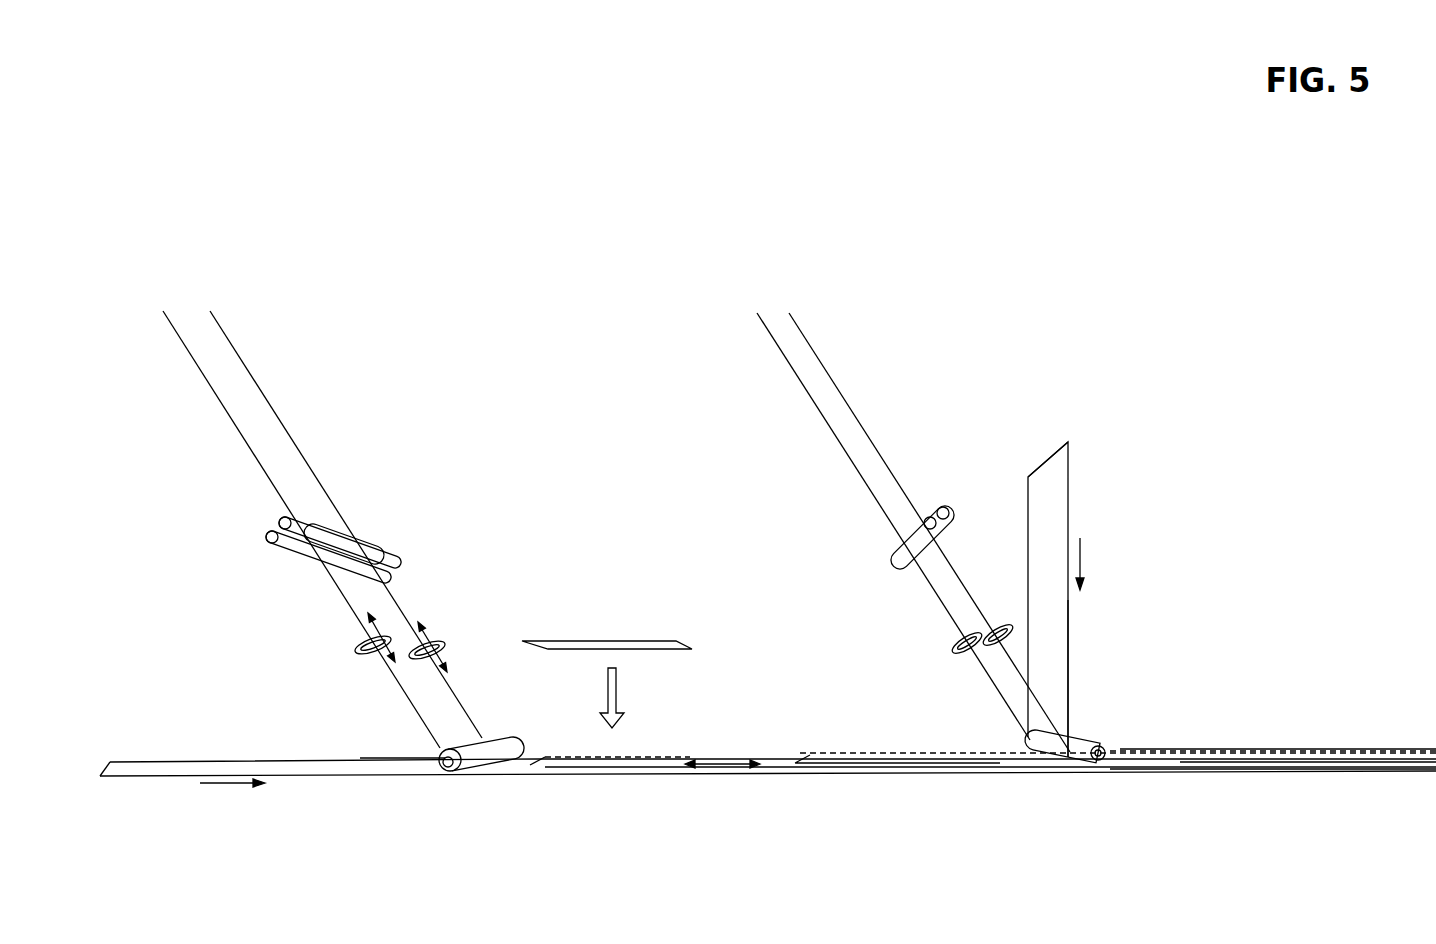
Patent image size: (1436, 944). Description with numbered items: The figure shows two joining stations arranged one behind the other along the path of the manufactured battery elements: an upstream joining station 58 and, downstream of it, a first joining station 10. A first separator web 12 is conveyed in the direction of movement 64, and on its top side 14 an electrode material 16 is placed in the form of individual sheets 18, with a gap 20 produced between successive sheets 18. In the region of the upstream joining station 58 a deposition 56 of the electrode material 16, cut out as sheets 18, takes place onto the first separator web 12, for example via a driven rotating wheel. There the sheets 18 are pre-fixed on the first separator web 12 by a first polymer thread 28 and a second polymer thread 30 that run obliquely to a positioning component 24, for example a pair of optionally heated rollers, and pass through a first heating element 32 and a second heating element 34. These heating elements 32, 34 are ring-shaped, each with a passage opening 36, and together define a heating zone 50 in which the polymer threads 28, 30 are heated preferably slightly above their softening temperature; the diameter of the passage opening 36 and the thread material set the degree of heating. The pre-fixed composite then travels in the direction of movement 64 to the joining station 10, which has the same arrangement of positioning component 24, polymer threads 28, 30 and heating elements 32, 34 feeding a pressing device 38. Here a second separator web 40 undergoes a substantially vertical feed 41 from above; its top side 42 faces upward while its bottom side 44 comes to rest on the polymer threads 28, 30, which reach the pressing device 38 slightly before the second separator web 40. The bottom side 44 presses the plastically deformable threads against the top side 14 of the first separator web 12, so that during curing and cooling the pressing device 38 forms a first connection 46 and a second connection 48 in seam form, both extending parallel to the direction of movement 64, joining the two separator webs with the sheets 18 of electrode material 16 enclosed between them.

The joining station 10 is at (1225, 420).
The first separator web 12 is at (333, 779).
The top side 14 is at (385, 768).
The electrode material 16 is at (979, 667).
The sheet 18 is at (655, 643).
The gap 20 is at (723, 762).
The positioning component 24 is at (283, 545).
The first polymer thread 28 is at (330, 582).
The second polymer thread 30 is at (390, 590).
The first heating element 32 is at (356, 656).
The second heating element 34 is at (437, 640).
The passage opening 36 is at (372, 658).
The pressing device 38 is at (437, 772).
The second separator web 40 is at (1046, 460).
The vertical feed 41 is at (1088, 556).
The top side of the second separator web 42 is at (1072, 668).
The bottom side of the second separator web 44 is at (1028, 490).
The first connection 46 is at (1192, 772).
The second connection 48 is at (1175, 754).
The heating zone 50 is at (415, 620).
The deposition 56 is at (606, 692).
The upstream joining station 58 is at (497, 450).
The direction of movement 64 is at (222, 786).